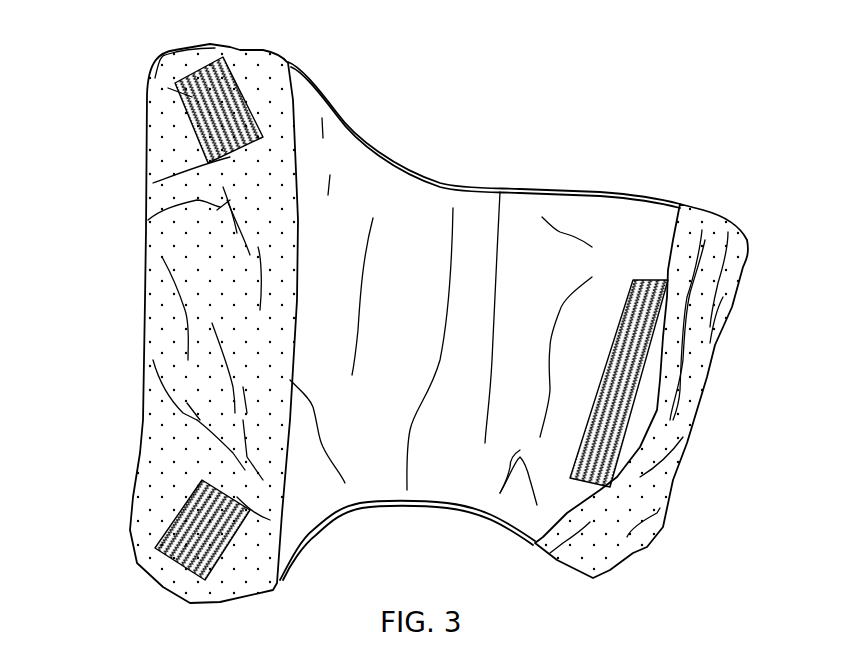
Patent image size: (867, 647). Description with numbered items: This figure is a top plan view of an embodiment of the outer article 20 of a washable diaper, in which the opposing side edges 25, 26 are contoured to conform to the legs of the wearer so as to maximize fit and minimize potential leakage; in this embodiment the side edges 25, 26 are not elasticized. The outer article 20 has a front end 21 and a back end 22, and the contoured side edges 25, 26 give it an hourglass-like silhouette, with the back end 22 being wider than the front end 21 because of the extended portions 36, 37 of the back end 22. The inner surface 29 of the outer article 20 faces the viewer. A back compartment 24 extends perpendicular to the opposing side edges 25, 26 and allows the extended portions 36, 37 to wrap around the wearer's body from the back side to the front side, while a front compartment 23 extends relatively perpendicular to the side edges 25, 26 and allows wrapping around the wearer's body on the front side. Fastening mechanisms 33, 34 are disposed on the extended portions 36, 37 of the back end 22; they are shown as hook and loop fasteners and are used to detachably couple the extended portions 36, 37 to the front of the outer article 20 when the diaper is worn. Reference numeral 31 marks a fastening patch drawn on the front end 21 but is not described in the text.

The outer article 20 is at (137, 205).
The front end 21 is at (702, 380).
The back end 22 is at (147, 283).
The front compartment 23 is at (657, 437).
The back compartment 24 is at (208, 365).
The opposing side edge 25 is at (523, 190).
The opposing side edge 26 is at (398, 505).
The inner surface 29 is at (576, 228).
The fastening component 31 is at (660, 317).
The fastening mechanism 33 is at (192, 97).
The fastening mechanism 34 is at (182, 533).
The extended portion 36 is at (248, 72).
The extended portion 37 is at (165, 577).